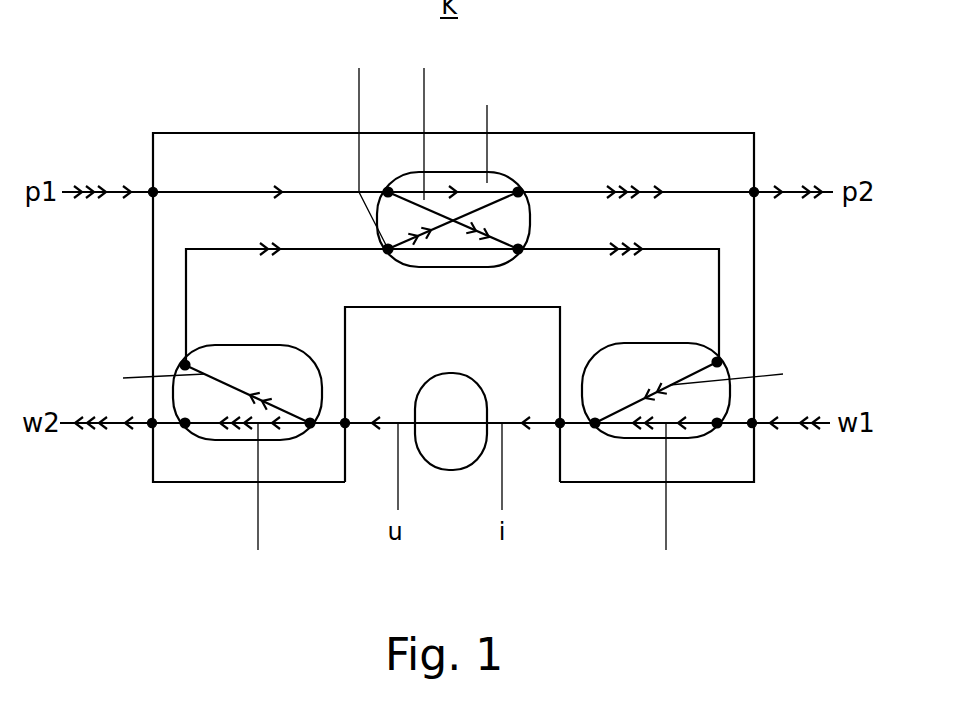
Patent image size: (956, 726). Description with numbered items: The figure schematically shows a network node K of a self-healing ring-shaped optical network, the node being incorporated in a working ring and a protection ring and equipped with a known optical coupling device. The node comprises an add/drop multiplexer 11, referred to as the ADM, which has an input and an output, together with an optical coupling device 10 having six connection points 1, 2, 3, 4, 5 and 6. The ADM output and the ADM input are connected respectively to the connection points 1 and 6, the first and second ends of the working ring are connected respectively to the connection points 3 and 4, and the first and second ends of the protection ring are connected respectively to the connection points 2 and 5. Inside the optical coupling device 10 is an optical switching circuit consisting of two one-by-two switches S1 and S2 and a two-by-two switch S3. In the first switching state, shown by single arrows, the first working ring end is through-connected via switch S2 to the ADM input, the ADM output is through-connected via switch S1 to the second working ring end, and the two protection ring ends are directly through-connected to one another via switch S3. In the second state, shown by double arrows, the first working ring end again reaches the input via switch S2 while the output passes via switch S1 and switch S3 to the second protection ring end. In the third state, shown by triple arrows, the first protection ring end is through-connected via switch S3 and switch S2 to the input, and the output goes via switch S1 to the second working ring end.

The connection point 1 is at (357, 484).
The connection point 2 is at (140, 135).
The connection point 3 is at (767, 484).
The connection point 4 is at (137, 484).
The connection point 5 is at (770, 135).
The connection point 6 is at (547, 484).
The optical coupling device 10 is at (223, 133).
The add/drop multiplexer 11 is at (450, 470).
The 1×2-switch S1 is at (220, 442).
The 1×2-switch S2 is at (627, 440).
The 2×2-switch S3 is at (458, 152).